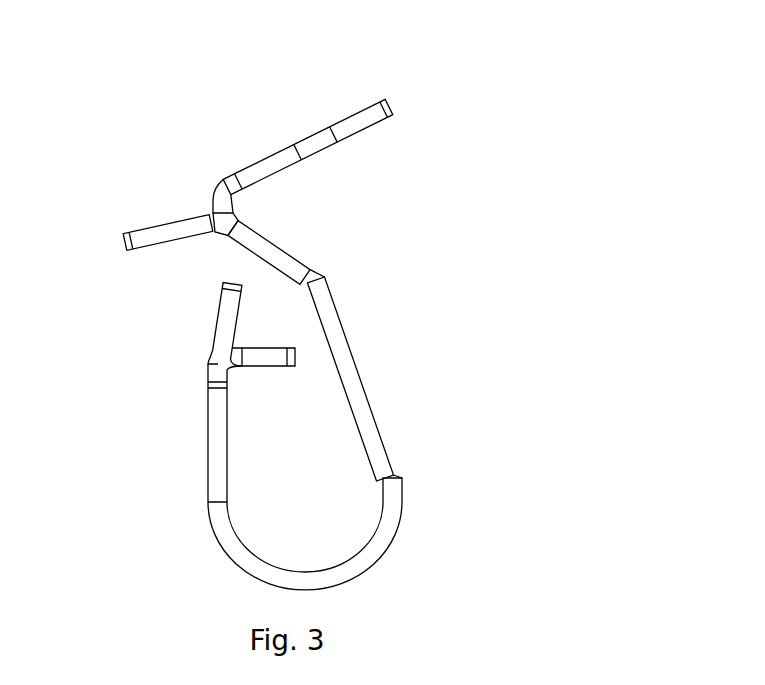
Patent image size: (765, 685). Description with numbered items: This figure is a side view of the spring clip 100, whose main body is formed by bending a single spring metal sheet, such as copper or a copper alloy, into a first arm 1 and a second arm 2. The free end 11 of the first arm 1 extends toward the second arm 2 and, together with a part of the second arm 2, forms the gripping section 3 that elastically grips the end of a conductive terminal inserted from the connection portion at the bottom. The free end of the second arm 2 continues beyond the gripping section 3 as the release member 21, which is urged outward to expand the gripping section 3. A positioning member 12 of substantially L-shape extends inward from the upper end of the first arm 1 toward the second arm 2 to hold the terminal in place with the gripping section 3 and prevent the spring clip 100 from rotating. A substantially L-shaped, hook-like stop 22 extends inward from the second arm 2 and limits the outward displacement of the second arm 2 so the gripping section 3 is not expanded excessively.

The spring clip 100 is at (363, 307).
The first arm 1 is at (208, 430).
The free end of the first arm 11 is at (215, 315).
The positioning member 12 is at (266, 358).
The second arm 2 is at (264, 248).
The release member 21 is at (363, 117).
The stop 22 is at (152, 240).
The gripping section 3 is at (238, 276).